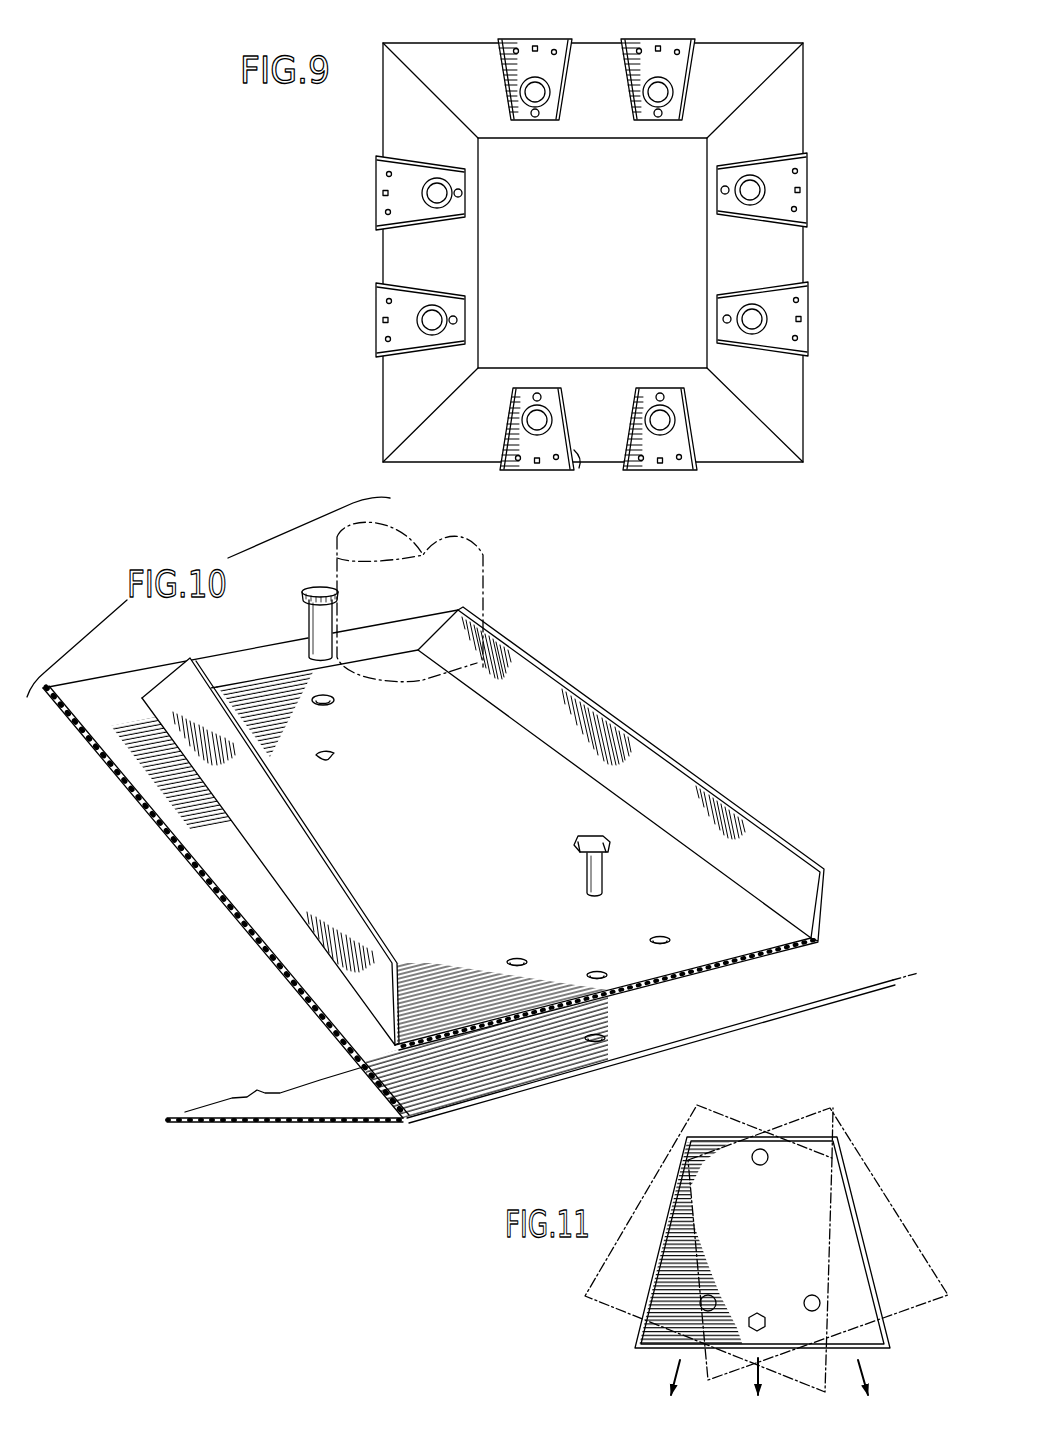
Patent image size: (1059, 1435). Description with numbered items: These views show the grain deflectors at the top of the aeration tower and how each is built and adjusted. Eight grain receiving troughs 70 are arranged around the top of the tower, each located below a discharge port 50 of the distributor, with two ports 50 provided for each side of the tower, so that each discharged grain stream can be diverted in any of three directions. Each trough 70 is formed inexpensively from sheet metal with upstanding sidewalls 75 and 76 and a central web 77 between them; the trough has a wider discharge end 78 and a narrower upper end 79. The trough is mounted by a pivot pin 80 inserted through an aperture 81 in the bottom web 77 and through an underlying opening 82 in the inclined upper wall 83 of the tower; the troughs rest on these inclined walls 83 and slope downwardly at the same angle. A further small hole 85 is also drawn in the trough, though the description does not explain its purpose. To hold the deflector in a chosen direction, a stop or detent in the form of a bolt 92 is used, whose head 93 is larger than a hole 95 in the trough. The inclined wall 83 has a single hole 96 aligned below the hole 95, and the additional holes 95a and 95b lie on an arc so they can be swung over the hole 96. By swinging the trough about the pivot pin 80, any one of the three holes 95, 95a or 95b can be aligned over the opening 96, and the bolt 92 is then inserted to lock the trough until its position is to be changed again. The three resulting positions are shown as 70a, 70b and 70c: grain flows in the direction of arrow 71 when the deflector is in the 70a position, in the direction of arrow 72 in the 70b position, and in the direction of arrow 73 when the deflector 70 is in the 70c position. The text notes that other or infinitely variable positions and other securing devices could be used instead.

In FIG. 9, the grain receiving trough 70 is at (540, 31).
In FIG. 10, the grain receiving trough 70 is at (647, 767).
In FIG. 11, the grain receiving trough 70 is at (848, 1147).
In FIG. 11, the first deflector position 70a is at (637, 1218).
In FIG. 11, the second deflector position 70b is at (652, 1285).
In FIG. 11, the third deflector position 70c is at (897, 1215).
In FIG. 11, the directional arrow 71 is at (673, 1365).
In FIG. 11, the directional arrow 72 is at (757, 1362).
In FIG. 11, the directional arrow 73 is at (867, 1362).
In FIG. 9, the discharge port 50 is at (633, 104).
In FIG. 9, the sidewall 75 is at (757, 228).
In FIG. 10, the sidewall 75 is at (325, 905).
In FIG. 9, the sidewall 76 is at (788, 123).
In FIG. 10, the sidewall 76 is at (770, 834).
In FIG. 10, the central web 77 is at (478, 814).
In FIG. 10, the discharge end 78 is at (718, 945).
In FIG. 10, the upper end 79 is at (240, 688).
In FIG. 9, the pivot pin 80 is at (463, 192).
In FIG. 10, the pivot pin 80 is at (323, 617).
In FIG. 10, the aperture 81 is at (338, 702).
In FIG. 10, the opening 82 is at (340, 760).
In FIG. 9, the inclined upper wall 83 is at (747, 80).
In FIG. 10, the inclined upper wall 83 is at (155, 815).
In FIG. 9, the hole 85 is at (537, 393).
In FIG. 10, the bolt 92 is at (605, 872).
In FIG. 10, the bolt head 93 is at (586, 836).
In FIG. 10, the hole 95 is at (599, 972).
In FIG. 10, the hole 95a is at (538, 937).
In FIG. 10, the hole 95b is at (665, 937).
In FIG. 10, the hole 96 is at (603, 1035).